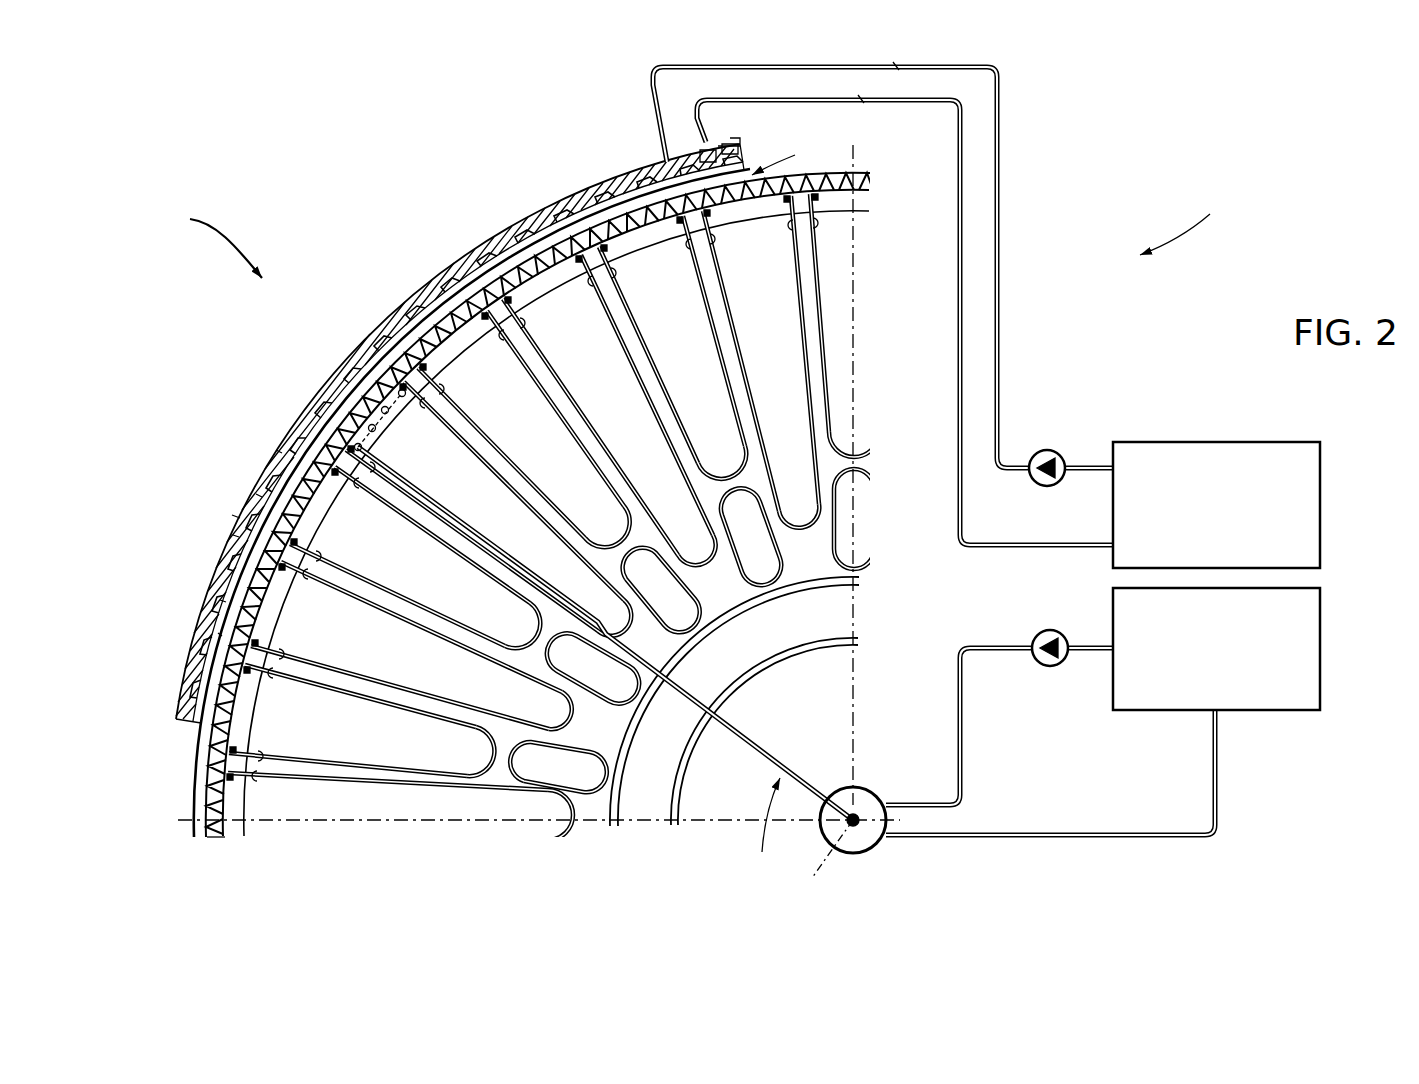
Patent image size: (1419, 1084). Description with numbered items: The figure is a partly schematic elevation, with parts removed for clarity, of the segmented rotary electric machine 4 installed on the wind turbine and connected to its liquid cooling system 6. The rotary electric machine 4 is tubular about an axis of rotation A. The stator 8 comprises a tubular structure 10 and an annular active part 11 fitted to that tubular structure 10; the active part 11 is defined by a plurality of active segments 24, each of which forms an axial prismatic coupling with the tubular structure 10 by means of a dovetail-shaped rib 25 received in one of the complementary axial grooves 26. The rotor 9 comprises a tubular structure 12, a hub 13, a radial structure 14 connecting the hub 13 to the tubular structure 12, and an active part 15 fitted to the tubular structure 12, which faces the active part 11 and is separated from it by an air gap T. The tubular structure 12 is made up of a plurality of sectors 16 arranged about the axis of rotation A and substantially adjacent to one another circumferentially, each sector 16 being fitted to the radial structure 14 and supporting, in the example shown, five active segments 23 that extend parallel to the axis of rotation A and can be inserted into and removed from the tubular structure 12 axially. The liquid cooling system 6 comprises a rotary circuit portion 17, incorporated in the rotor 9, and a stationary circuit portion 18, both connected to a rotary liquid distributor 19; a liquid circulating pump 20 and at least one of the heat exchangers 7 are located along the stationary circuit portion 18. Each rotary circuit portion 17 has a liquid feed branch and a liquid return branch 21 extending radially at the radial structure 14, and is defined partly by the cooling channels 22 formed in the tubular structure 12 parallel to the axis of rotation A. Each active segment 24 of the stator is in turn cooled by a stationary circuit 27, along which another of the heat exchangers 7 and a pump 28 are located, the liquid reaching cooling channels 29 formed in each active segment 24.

The rotary electric machine 4 is at (216, 242).
The liquid cooling system 6 is at (1184, 222).
The heat exchanger 7 is at (1258, 712).
The stator 8 is at (540, 190).
The rotor 9 is at (825, 228).
The tubular structure 10 is at (487, 238).
The annular active part 11 is at (193, 737).
The tubular structure 12 is at (880, 200).
The hub 13 is at (793, 625).
The radial structure 14 is at (415, 802).
The active part 15 is at (215, 845).
The sector 16 is at (238, 806).
The rotary circuit portion 17 is at (764, 828).
The stationary circuit portion 18 is at (1085, 832).
The rotary liquid distributor 19 is at (870, 800).
The liquid circulating pump 20 is at (1050, 668).
The branch 21 is at (740, 740).
The cooling channel 22 is at (405, 396).
The active segment 23 is at (508, 238).
The active segment 24 is at (222, 600).
The dovetail-shaped rib 25 is at (258, 495).
The axial groove 26 is at (240, 700).
The stationary circuit 27 is at (1003, 295).
The pump 28 is at (1050, 450).
The cooling channel 29 is at (718, 148).
The air gap T is at (783, 155).
The axis of rotation A is at (825, 522).